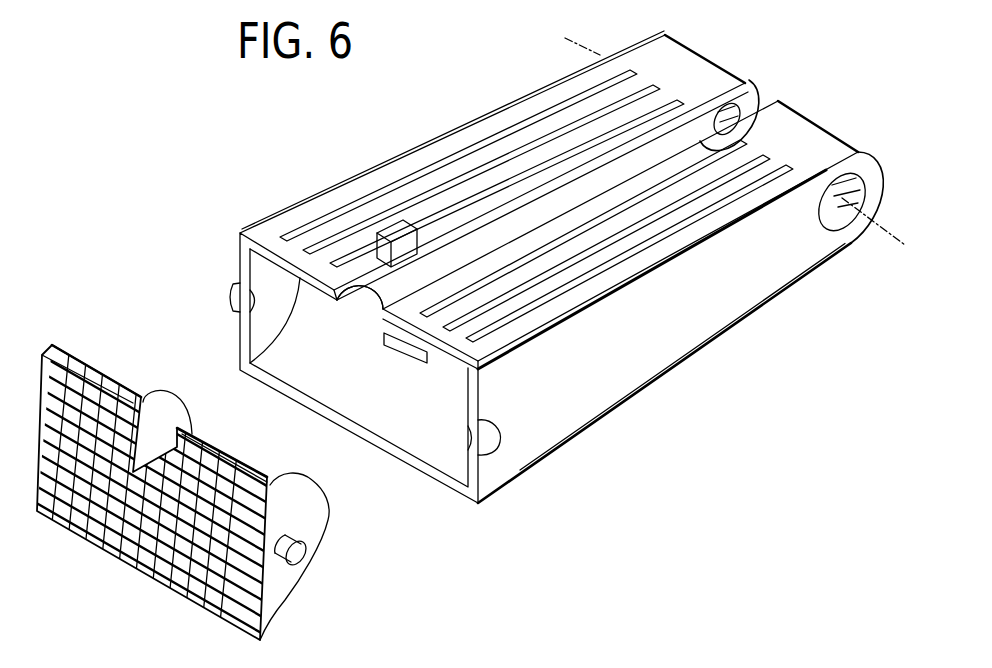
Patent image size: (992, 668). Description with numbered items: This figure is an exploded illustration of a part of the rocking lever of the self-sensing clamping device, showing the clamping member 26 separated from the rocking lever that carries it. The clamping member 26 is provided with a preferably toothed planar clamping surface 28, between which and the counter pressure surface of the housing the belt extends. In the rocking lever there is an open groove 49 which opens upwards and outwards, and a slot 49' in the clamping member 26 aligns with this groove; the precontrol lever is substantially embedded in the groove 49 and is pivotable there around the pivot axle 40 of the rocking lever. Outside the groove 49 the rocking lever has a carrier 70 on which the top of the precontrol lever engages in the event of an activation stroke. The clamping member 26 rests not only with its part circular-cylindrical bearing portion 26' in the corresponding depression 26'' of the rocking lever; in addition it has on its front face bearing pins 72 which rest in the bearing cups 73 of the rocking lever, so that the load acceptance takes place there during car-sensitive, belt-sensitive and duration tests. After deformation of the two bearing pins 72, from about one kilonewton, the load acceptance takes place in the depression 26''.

The clamping member 26 is at (214, 495).
The part circular-cylindrical bearing portion 26' is at (331, 556).
The depression 26'' is at (542, 270).
The toothed planar clamping surface 28 is at (170, 575).
The pivot axle 40 is at (889, 238).
The open groove 49 is at (360, 318).
The slot 49' is at (173, 395).
The carrier 70 is at (408, 240).
The bearing pins 72 is at (302, 561).
The bearing cups 73 is at (233, 296).